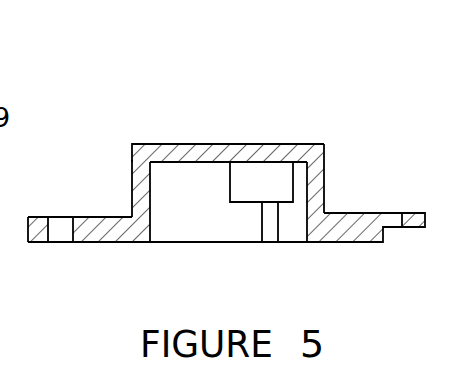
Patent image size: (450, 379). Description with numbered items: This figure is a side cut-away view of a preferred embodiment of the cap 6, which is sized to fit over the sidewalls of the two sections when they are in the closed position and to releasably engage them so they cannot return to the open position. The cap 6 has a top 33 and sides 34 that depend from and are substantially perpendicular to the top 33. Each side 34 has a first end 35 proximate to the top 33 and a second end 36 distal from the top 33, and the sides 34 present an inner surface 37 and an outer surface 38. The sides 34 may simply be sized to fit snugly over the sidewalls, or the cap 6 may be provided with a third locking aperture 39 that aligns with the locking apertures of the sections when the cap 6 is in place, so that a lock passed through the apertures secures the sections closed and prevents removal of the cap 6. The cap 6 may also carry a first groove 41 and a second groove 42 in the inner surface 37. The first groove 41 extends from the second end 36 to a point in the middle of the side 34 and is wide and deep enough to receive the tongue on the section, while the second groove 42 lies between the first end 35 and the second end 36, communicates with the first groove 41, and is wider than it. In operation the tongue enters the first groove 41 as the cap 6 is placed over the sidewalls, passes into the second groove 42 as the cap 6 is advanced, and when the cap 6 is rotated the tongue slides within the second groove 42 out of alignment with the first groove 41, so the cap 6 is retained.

The cap 6 is at (308, 83).
The top 33 is at (157, 152).
The sides 34 is at (135, 184).
The first end 35 is at (135, 157).
The second end 36 is at (132, 207).
The inner surface 37 is at (150, 225).
The outer surface 38 is at (323, 170).
The third locking aperture 39 is at (58, 233).
The first groove 41 is at (270, 228).
The second groove 42 is at (255, 178).